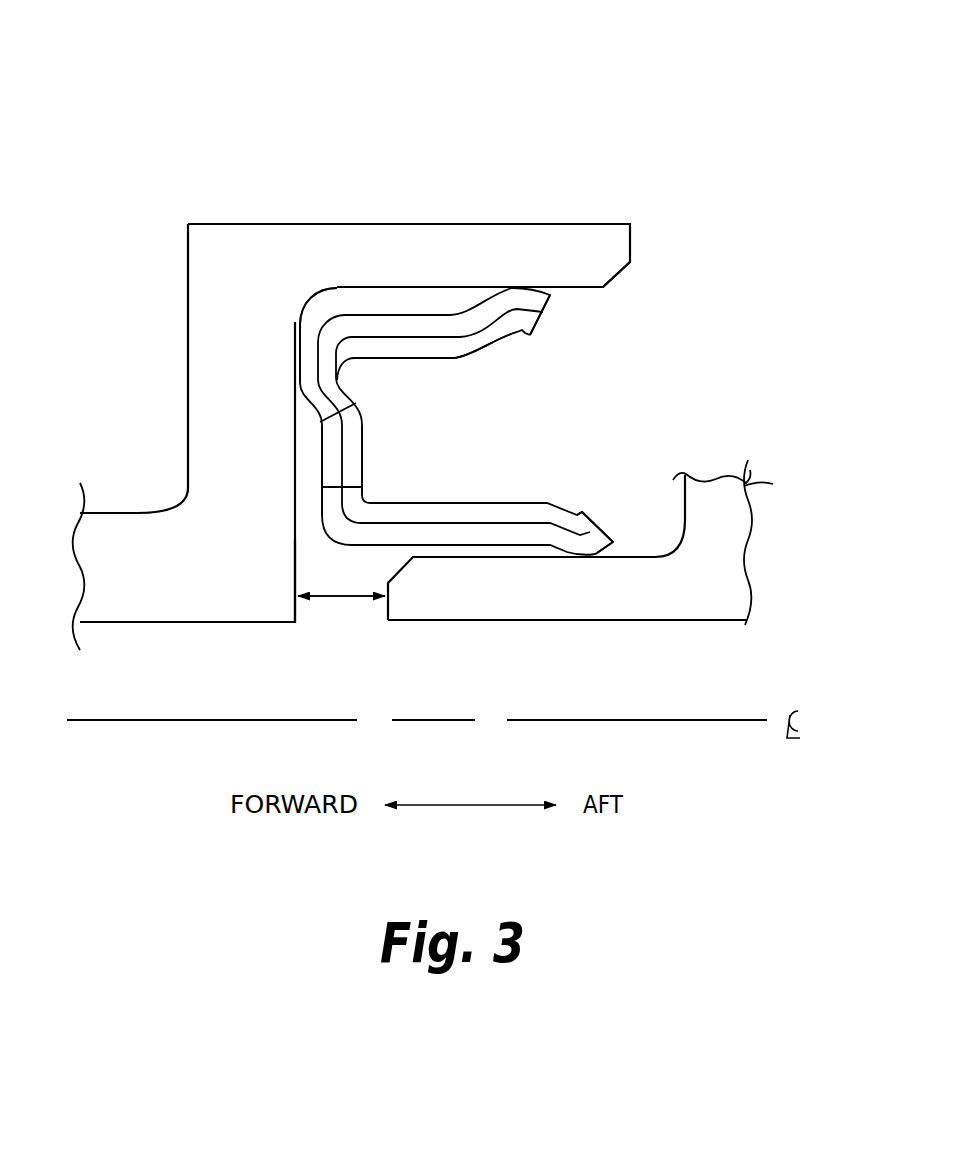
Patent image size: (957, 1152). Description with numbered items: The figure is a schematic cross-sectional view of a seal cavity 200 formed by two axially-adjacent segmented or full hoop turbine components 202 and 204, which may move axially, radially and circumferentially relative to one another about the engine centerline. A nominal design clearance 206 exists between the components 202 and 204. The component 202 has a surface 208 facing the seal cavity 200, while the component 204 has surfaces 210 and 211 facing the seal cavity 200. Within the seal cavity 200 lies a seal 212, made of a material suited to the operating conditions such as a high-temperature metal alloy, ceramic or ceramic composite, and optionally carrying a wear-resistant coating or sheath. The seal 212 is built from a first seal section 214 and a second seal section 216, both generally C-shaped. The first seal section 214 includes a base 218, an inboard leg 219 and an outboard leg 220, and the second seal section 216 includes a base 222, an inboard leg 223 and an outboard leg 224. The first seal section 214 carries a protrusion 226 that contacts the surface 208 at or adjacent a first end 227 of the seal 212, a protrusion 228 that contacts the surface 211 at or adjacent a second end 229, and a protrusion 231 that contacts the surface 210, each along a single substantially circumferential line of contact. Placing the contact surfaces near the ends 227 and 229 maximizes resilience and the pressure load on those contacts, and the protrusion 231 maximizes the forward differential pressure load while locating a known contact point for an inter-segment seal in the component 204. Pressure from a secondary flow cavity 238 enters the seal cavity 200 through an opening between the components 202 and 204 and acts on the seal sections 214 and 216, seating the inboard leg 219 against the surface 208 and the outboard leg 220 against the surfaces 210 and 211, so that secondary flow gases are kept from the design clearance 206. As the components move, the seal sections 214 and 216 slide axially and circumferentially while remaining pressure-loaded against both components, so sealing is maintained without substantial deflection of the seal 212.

The seal cavity 200 is at (739, 247).
The secondary flow cavity 238 is at (535, 75).
The turbine component 202 is at (717, 620).
The turbine component 204 is at (152, 623).
The nominal design clearance 206 is at (340, 598).
The surface 208 is at (615, 557).
The surface 210 is at (297, 613).
The surface 211 is at (571, 288).
The seal 212 is at (619, 398).
The first seal section 214 is at (366, 312).
The second seal section 216 is at (468, 358).
The base 218 is at (320, 453).
The inboard leg 219 is at (342, 533).
The outboard leg 220 is at (313, 332).
The base 222 is at (362, 457).
The inboard leg 223 is at (467, 503).
The outboard leg 224 is at (398, 358).
The protrusion 226 is at (583, 558).
The first end 227 is at (592, 538).
The protrusion 228 is at (522, 288).
The second end 229 is at (543, 312).
The protrusion 231 is at (293, 373).